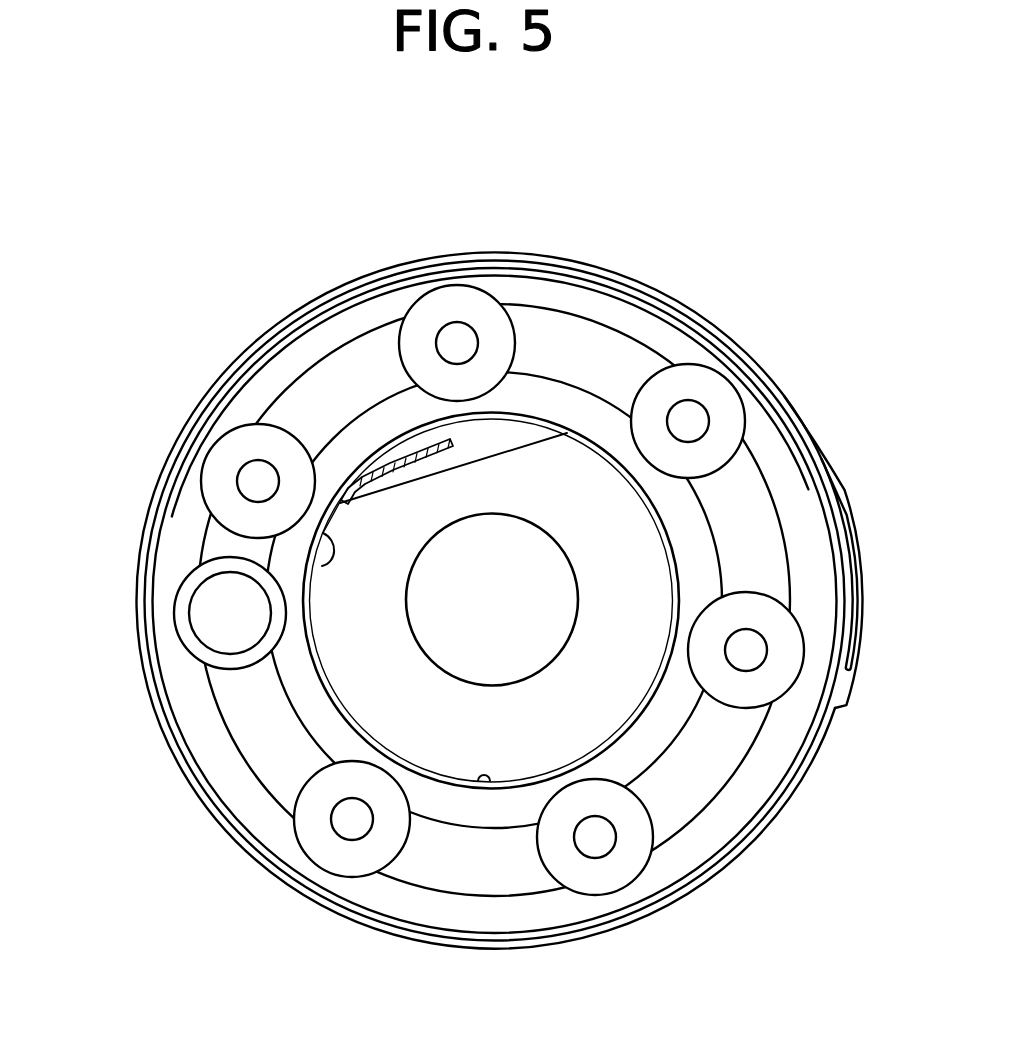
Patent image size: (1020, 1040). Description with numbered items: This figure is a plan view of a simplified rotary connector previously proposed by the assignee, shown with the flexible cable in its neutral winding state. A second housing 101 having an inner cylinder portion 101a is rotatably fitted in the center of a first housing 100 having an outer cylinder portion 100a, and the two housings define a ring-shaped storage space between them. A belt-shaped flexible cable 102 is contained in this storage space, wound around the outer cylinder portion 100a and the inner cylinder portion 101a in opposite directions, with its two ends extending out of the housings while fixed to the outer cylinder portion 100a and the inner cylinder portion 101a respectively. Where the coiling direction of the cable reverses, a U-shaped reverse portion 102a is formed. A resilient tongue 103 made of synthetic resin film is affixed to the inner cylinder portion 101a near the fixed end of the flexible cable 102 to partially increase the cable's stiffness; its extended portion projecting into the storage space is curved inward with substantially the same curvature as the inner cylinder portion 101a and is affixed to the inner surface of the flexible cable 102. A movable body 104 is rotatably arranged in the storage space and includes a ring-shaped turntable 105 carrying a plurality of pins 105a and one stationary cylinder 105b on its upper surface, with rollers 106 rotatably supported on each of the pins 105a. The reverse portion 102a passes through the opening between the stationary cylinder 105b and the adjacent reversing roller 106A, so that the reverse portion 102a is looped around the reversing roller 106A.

The first housing 100 is at (498, 252).
The outer cylinder portion 100a is at (578, 258).
The second housing 101 is at (577, 468).
The inner cylinder portion 101a is at (481, 776).
The flexible cable 102 is at (192, 768).
The reverse portion 102a is at (210, 533).
The resilient tongue 103 is at (290, 567).
The movable body 104 is at (610, 323).
The ring-shaped turntable 105 is at (727, 752).
The pins 105a is at (457, 340).
The stationary cylinder 105b is at (177, 582).
The rollers 106 is at (420, 322).
The reversing roller 106A is at (203, 413).